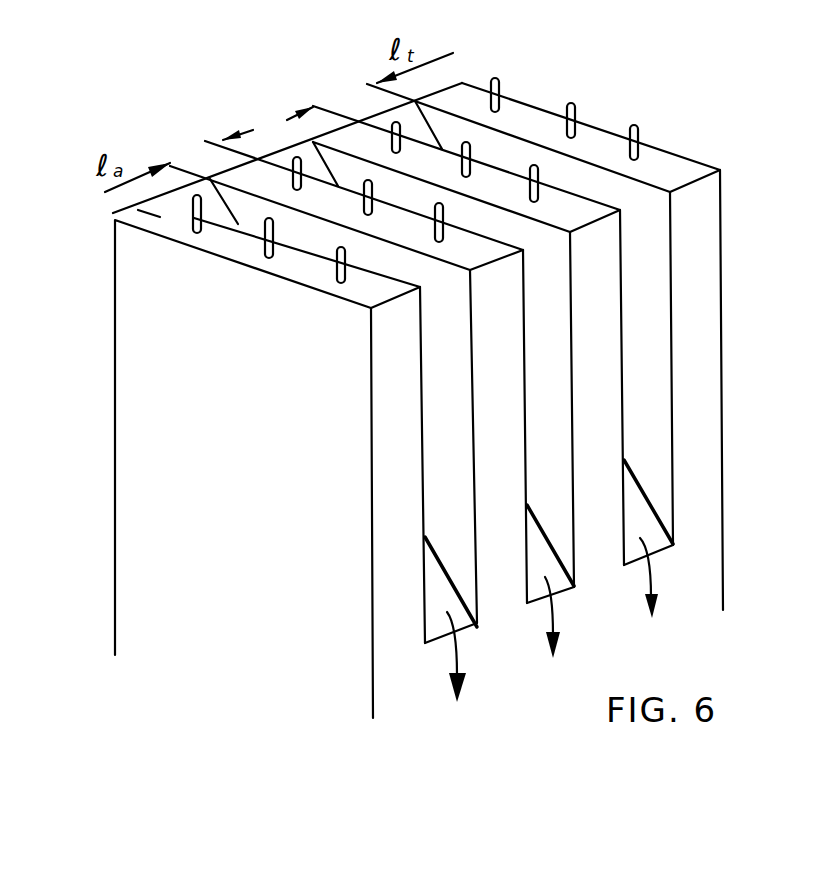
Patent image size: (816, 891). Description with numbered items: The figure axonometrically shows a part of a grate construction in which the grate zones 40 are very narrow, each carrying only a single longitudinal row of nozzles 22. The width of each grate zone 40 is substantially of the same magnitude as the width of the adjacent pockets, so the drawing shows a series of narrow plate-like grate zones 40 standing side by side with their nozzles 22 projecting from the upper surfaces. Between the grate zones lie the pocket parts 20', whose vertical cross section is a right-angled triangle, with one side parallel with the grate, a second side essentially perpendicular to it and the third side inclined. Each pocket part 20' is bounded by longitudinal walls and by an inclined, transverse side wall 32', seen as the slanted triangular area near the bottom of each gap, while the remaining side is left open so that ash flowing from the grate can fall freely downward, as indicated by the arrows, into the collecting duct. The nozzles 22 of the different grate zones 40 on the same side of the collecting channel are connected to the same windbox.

The pocket part 20' is at (419, 400).
The nozzle 22 is at (574, 117).
The inclined transverse side wall 32' is at (481, 581).
The grate zone 40 is at (115, 213).